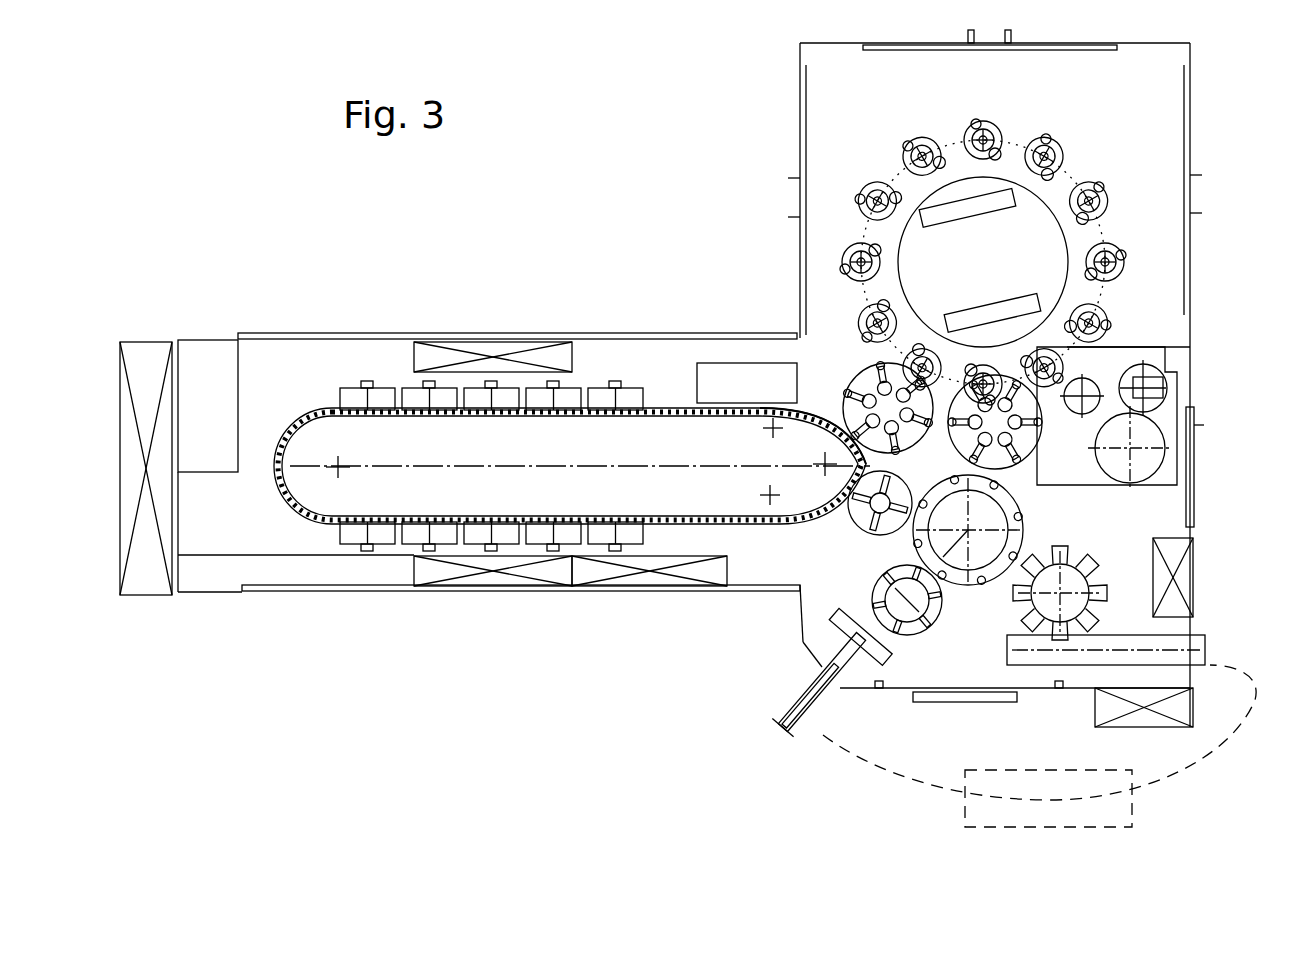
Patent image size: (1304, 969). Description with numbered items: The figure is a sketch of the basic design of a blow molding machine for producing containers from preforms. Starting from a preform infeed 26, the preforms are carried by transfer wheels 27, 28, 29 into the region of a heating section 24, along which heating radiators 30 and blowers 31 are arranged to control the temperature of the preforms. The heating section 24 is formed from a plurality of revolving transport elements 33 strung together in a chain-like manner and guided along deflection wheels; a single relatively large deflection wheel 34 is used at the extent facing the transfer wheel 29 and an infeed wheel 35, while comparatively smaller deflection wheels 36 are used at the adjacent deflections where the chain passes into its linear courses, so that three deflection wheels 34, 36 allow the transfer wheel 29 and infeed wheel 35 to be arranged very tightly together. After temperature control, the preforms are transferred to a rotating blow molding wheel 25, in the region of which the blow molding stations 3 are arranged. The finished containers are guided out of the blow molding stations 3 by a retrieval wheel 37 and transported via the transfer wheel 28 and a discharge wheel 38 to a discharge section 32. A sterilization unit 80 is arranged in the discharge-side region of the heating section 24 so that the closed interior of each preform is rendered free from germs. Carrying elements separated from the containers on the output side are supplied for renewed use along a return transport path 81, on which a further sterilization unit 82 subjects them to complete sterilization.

The blow molding stations 3 is at (835, 250).
The heating section 24 is at (606, 362).
The blow molding wheel 25 is at (920, 193).
The preform infeed 26 is at (828, 693).
The transfer wheel 27 is at (927, 640).
The transfer wheel 28 is at (970, 583).
The transfer wheel 29 is at (870, 535).
The heating radiators 30 is at (387, 388).
The blowers 31 is at (490, 342).
The discharge section 32 is at (1208, 660).
The transport elements 33 is at (312, 520).
The deflection wheel 34 is at (338, 470).
The infeed wheel 35 is at (860, 382).
The deflection wheels 36 is at (714, 370).
The retrieval wheel 37 is at (1042, 445).
The discharge wheel 38 is at (1067, 608).
The sterilization unit 80 is at (745, 405).
The return transport path 81 is at (1100, 803).
The further sterilization unit 82 is at (967, 820).